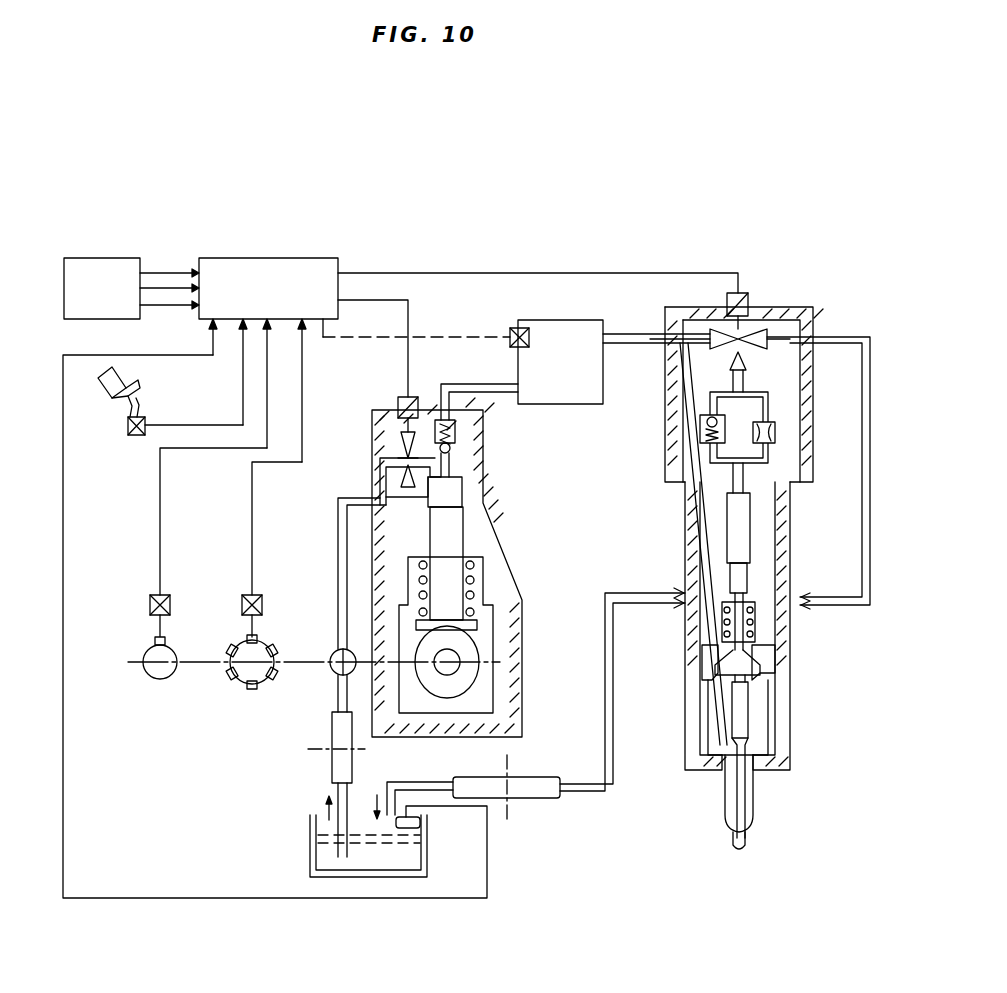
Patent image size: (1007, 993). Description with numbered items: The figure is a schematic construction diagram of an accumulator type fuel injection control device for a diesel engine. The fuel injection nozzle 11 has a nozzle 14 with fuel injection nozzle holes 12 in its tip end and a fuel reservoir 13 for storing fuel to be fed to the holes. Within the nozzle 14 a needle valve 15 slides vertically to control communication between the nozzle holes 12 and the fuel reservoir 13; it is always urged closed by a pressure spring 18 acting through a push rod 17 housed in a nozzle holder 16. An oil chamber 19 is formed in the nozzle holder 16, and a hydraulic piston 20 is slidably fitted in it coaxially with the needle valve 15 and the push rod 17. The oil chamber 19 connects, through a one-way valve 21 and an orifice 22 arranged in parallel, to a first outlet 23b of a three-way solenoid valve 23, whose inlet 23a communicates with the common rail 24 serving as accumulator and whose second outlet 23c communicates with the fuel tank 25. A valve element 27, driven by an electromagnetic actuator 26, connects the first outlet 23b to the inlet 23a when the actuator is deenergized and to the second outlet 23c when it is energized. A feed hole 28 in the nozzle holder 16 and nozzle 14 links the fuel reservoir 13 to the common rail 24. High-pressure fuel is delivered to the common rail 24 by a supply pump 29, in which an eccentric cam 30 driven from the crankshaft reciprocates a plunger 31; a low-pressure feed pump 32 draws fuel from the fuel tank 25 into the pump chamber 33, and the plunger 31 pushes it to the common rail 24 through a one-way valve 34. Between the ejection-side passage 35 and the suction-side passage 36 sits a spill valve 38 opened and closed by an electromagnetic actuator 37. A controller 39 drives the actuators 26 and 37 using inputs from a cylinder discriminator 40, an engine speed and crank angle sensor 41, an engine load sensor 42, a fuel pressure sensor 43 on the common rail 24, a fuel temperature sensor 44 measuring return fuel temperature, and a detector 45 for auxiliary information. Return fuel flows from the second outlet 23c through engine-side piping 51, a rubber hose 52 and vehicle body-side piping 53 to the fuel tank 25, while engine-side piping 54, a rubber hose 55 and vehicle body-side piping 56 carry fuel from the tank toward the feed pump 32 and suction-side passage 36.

The fuel injection nozzle 11 is at (800, 516).
The fuel injection nozzle holes 12 is at (733, 839).
The fuel reservoir 13 is at (704, 742).
The nozzle 14 is at (725, 794).
The needle valve 15 is at (750, 708).
The nozzle holder 16 is at (775, 552).
The push rod 17 is at (753, 656).
The pressure spring 18 is at (756, 624).
The oil chamber 19 is at (725, 497).
The hydraulic piston 20 is at (733, 534).
The one-way valve 21 is at (700, 435).
The orifice 22 is at (776, 433).
The three-way solenoid valve 23 is at (795, 302).
The inlet 23a is at (668, 330).
The first outlet 23b is at (746, 371).
The second outlet 23c is at (804, 332).
The common rail 24 is at (570, 406).
The fuel tank 25 is at (428, 850).
The electromagnetic actuator 26 is at (748, 293).
The valve element 27 is at (698, 305).
The feed hole 28 is at (690, 582).
The supply pump 29 is at (512, 526).
The eccentric cam 30 is at (470, 676).
The plunger 31 is at (463, 549).
The low-pressure feed pump 32 is at (334, 653).
The pump chamber 33 is at (458, 494).
The one-way valve 34 is at (455, 434).
The ejection-side passage 35 is at (463, 461).
The suction-side passage 36 is at (390, 511).
The electromagnetic actuator 37 is at (398, 398).
The spill valve 38 is at (400, 444).
The controller 39 is at (292, 258).
The cylinder discriminator 40 is at (150, 605).
The engine speed and crank angle sensor 41 is at (242, 605).
The engine load sensor 42 is at (128, 429).
The fuel pressure sensor 43 is at (514, 328).
The fuel temperature sensor 44 is at (425, 820).
The detector 45 is at (106, 259).
The engine-side piping 51 is at (870, 412).
The rubber hose 52 is at (522, 798).
The vehicle body-side piping 53 is at (414, 782).
The engine-side piping 54 is at (336, 694).
The rubber hose 55 is at (332, 727).
The vehicle body-side piping 56 is at (332, 790).